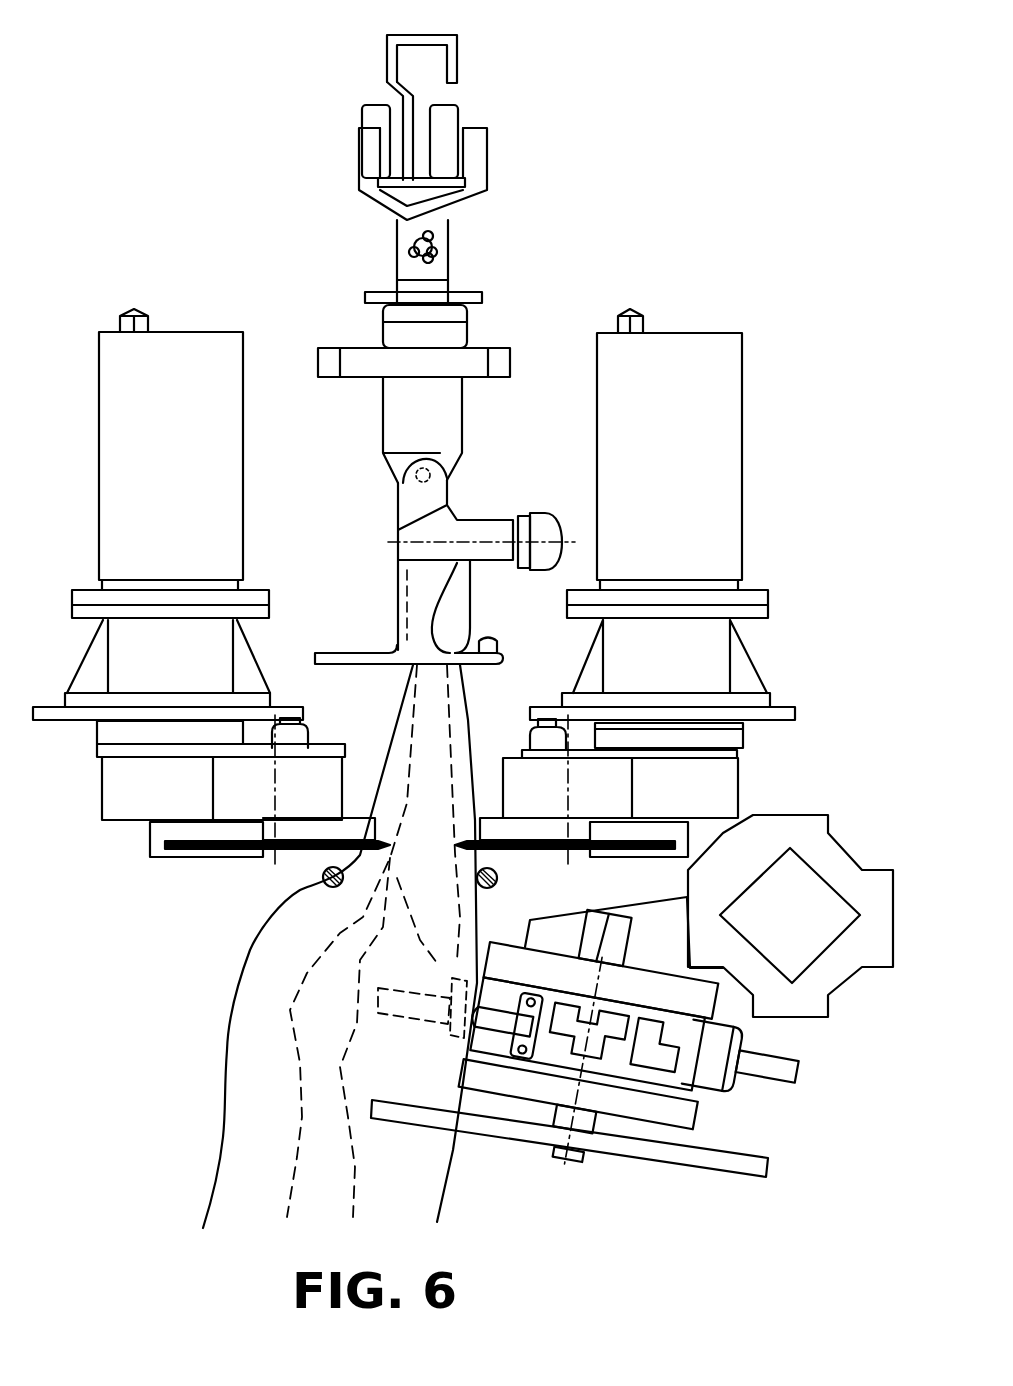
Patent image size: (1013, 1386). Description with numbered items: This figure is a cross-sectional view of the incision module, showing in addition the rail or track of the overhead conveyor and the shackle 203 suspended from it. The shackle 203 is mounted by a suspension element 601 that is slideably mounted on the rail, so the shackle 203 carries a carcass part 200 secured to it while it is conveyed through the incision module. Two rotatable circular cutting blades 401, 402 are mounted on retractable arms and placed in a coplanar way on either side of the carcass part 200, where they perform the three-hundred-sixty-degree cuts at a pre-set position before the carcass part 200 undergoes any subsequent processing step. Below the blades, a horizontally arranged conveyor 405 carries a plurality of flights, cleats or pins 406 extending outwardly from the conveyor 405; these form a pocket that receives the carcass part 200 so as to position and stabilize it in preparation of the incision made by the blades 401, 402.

The suspension element 601 is at (393, 60).
The shackle 203 is at (392, 661).
The rotatable circular cutting blade 401 is at (325, 845).
The rotatable circular cutting blade 402 is at (483, 835).
The flights, cleats or pins 406 is at (404, 1005).
The carcass body 200 is at (286, 1114).
The horizontal arranged conveyor 405 is at (657, 1206).